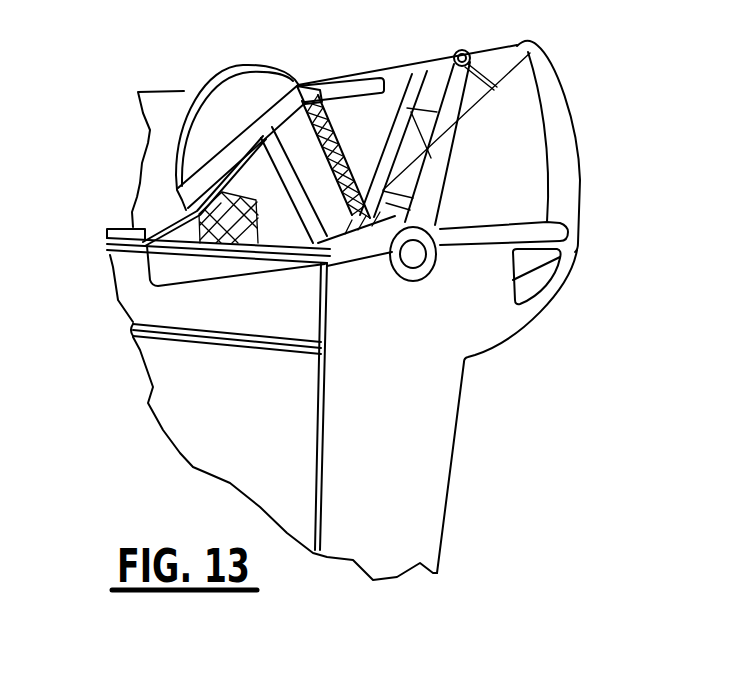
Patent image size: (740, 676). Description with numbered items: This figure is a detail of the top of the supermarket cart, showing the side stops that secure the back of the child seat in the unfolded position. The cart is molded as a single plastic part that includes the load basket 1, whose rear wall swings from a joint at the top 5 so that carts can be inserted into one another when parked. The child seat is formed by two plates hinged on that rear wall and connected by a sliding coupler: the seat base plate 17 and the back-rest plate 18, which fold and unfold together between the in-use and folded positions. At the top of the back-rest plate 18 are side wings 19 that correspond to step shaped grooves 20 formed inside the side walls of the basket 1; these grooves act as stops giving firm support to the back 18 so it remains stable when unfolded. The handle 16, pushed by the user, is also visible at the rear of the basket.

The load basket 1 is at (155, 158).
The top joint 5 is at (443, 148).
The handle 16 is at (563, 160).
The seat base plate 17 is at (321, 263).
The back-rest plate 18 is at (235, 115).
The side wings 19 is at (316, 97).
The step shaped grooves 20 is at (352, 90).